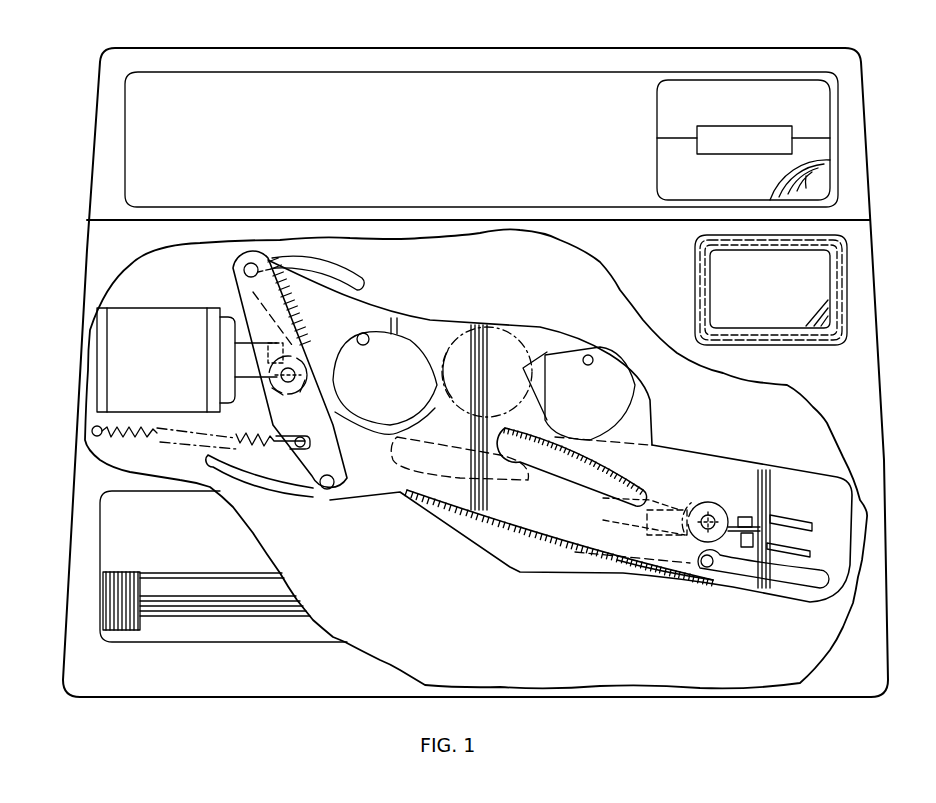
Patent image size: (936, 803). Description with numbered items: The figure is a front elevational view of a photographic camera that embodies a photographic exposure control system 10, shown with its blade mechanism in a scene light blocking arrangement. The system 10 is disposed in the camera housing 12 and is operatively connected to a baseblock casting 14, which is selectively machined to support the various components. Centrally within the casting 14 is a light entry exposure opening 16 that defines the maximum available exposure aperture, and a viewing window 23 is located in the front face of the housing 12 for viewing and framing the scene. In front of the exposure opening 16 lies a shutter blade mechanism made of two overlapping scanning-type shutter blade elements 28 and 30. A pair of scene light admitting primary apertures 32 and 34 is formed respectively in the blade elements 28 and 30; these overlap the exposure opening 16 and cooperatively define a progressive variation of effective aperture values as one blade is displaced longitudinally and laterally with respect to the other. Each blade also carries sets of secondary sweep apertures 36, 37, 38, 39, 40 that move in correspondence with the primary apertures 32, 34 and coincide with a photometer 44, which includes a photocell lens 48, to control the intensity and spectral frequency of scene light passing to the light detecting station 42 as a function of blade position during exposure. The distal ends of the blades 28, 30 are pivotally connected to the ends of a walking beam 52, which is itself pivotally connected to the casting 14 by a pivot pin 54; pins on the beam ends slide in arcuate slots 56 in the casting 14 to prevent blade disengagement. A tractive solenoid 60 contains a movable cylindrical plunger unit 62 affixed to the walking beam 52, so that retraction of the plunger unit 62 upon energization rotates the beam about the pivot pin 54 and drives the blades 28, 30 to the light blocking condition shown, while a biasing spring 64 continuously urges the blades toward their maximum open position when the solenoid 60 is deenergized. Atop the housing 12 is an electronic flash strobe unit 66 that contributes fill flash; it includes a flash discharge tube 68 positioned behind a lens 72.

The photographic exposure control system 10 is at (510, 314).
The camera housing 12 is at (871, 293).
The baseblock casting 14 is at (730, 407).
The light entry exposure opening 16 is at (521, 322).
The viewing window 23 is at (780, 287).
The shutter blade element 28 is at (438, 321).
The shutter blade element 30 is at (631, 360).
The primary aperture 32 is at (362, 334).
The primary aperture 34 is at (590, 357).
The secondary sweep aperture set 36 is at (700, 504).
The secondary sweep aperture set 37 is at (680, 525).
The secondary sweep aperture set 38 is at (770, 504).
The secondary sweep aperture set 39 is at (648, 500).
The secondary sweep aperture set 40 is at (800, 534).
The light detecting station 42 is at (735, 513).
The photometer 44 is at (712, 501).
The photocell lens 48 is at (684, 574).
The walking beam 52 is at (243, 298).
The pivot pin 54 is at (300, 372).
The arcuate slot 56 is at (363, 284).
The solenoid 60 is at (148, 318).
The plunger unit 62 is at (247, 357).
The biasing spring 64 is at (250, 432).
The electronic flash strobe unit 66 is at (868, 113).
The flash discharge tube 68 is at (752, 132).
The lens 72 is at (739, 181).